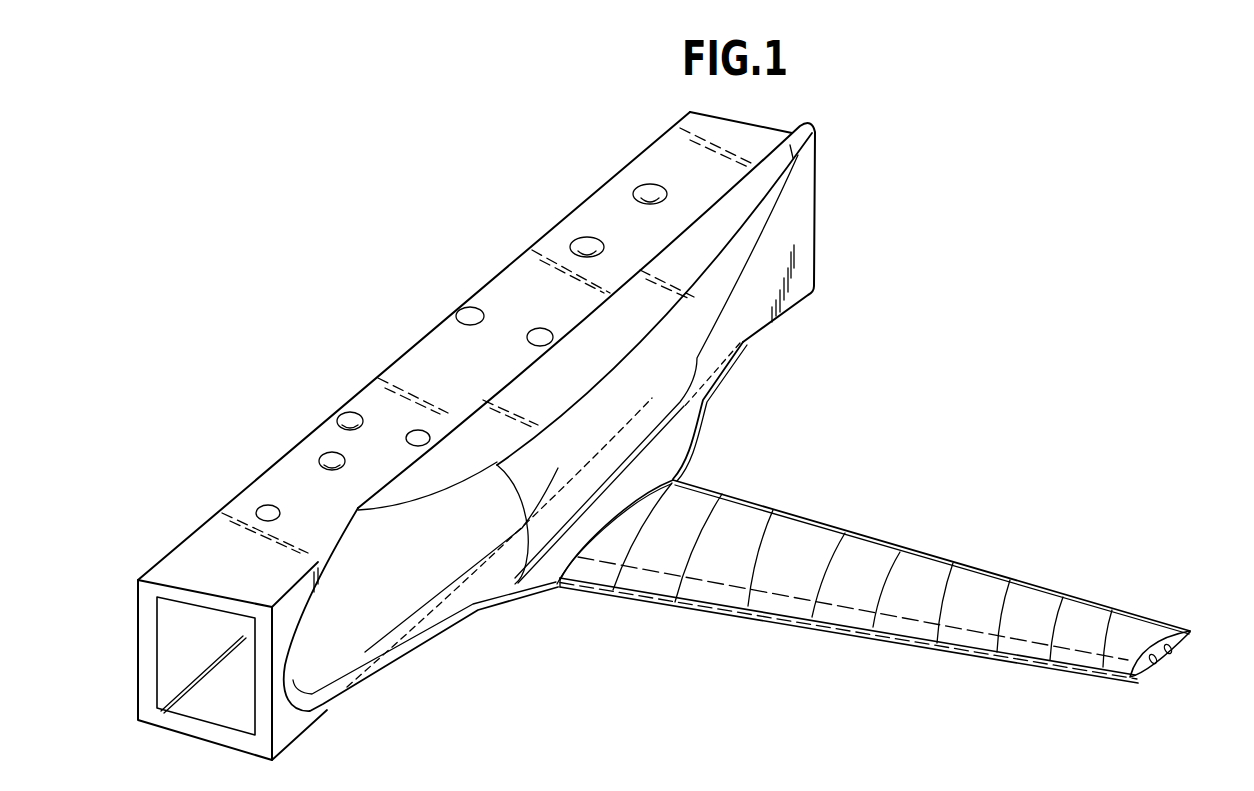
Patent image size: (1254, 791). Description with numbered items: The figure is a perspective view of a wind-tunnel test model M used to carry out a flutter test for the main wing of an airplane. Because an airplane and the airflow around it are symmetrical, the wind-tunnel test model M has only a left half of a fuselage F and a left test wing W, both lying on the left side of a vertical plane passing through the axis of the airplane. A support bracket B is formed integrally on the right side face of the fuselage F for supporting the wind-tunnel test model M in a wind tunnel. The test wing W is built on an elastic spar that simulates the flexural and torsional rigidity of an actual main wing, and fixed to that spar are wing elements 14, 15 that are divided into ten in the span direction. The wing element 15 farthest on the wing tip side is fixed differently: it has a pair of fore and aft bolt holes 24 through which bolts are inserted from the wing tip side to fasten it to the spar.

The wind-tunnel test model M is at (453, 262).
The support bracket B is at (410, 365).
The fuselage F is at (430, 587).
The test wing W is at (889, 578).
The wing elements 14 is at (773, 619).
The wing element 15 is at (1093, 662).
The bolt holes 24 is at (1158, 661).